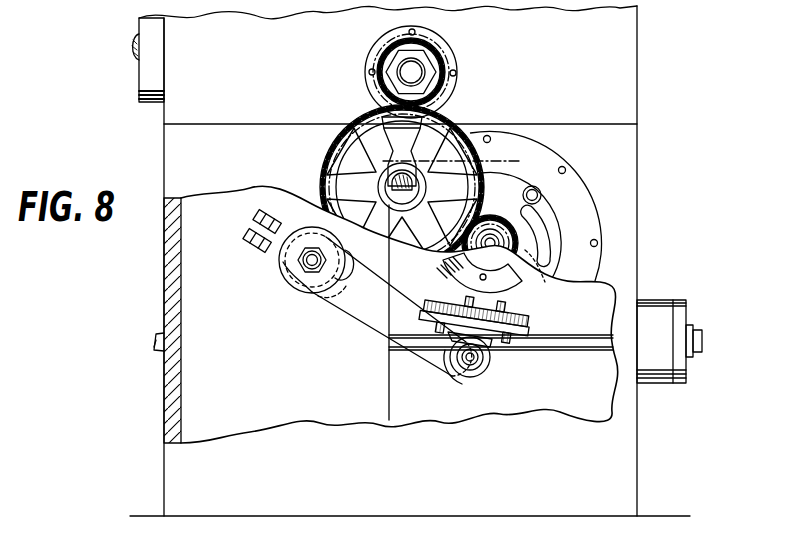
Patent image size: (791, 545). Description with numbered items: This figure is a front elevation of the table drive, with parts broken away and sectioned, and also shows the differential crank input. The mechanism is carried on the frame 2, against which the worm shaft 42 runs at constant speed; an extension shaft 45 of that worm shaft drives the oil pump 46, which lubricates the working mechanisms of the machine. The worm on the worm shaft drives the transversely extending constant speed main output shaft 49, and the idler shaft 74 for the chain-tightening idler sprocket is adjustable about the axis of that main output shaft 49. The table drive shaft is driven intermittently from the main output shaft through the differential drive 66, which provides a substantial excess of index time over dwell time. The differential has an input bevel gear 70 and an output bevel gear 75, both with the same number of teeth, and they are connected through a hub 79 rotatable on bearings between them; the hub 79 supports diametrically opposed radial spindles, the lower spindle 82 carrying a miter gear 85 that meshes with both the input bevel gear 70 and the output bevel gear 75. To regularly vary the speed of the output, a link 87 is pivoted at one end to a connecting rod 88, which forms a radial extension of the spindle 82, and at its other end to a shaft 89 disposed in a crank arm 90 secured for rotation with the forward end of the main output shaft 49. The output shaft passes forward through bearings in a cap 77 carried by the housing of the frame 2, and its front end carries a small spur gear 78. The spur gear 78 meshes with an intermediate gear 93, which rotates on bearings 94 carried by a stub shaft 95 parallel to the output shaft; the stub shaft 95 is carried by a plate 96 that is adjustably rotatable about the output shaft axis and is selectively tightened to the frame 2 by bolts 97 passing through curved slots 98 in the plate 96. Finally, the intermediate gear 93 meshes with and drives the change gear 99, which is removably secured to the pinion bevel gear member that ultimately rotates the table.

The frame 2 is at (165, 431).
The worm shaft 42 is at (156, 333).
The extension shaft 45 is at (578, 342).
The oil pump 46 is at (661, 303).
The main output shaft 49 is at (283, 233).
The differential drive 66 is at (538, 311).
The bevel gear 70 is at (433, 297).
The idler shaft 74 is at (320, 305).
The bevel gear 75 is at (543, 286).
The cap 77 is at (573, 188).
The spur gear 78 is at (487, 220).
The hub 79 is at (433, 273).
The spindle 82 is at (490, 340).
The miter gear 85 is at (531, 317).
The link 87 is at (402, 326).
The connecting rod 88 is at (463, 376).
The shaft 89 is at (300, 268).
The crank arm 90 is at (268, 254).
The intermediate gear 93 is at (332, 212).
The bearings 94 is at (400, 170).
The stub shaft 95 is at (421, 203).
The plate 96 is at (497, 175).
The bolts 97 is at (535, 186).
The curved slots 98 is at (552, 228).
The change gear 99 is at (435, 50).